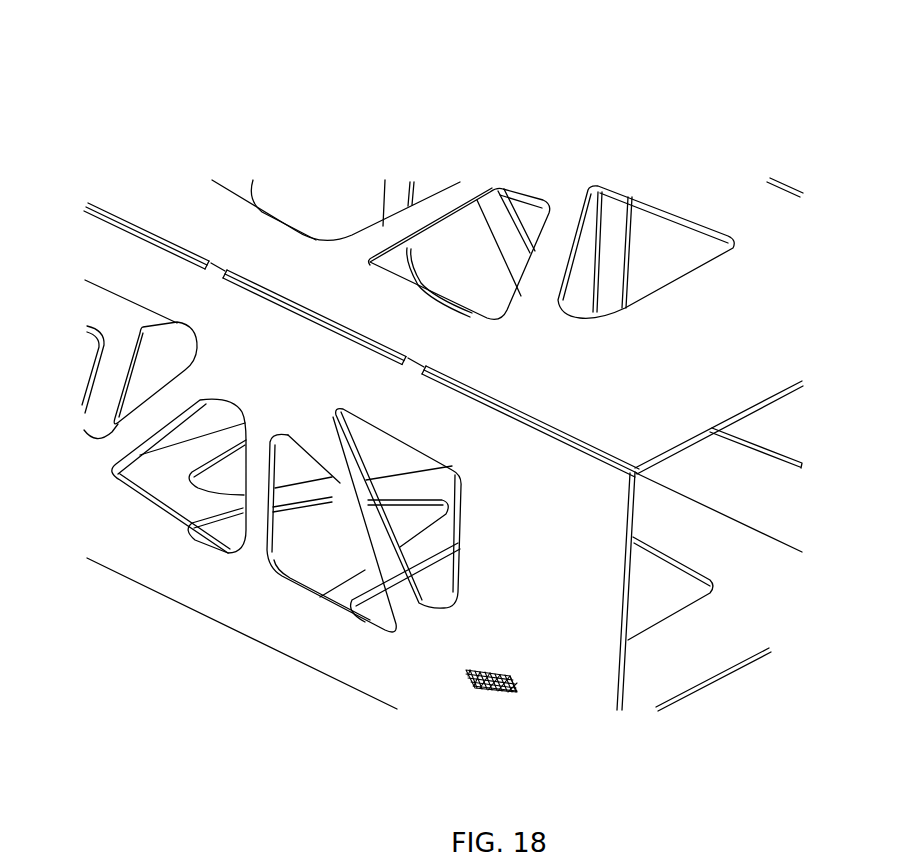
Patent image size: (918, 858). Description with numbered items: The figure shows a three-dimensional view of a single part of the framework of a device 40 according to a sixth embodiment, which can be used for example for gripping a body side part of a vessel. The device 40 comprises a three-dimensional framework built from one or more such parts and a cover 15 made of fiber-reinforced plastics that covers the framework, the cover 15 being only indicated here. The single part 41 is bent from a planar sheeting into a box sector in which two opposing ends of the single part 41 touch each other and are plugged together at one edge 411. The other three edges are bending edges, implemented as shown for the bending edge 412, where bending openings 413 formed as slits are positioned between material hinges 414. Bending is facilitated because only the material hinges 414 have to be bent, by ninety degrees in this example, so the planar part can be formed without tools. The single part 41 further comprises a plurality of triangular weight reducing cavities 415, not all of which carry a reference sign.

The device 40 is at (712, 84).
The single part 41 is at (393, 690).
The edge 411 is at (207, 617).
The bending edge 412 is at (68, 176).
The bending opening 413 is at (116, 218).
The material hinge 414 is at (220, 268).
The weight reducing cavity 415 is at (707, 221).
The cover 15 is at (473, 682).